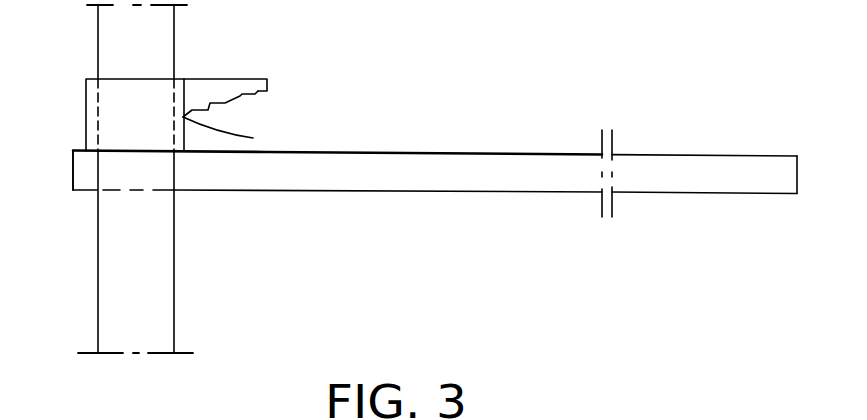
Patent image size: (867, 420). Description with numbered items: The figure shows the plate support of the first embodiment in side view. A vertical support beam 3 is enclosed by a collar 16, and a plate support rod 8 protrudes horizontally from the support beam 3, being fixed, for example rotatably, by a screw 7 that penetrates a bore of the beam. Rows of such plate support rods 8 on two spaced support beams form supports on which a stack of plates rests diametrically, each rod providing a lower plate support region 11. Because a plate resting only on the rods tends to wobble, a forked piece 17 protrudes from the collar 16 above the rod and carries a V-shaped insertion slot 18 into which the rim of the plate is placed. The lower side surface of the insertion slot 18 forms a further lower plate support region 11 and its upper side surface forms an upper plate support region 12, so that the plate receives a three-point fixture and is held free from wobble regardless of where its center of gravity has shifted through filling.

The support beam 3 is at (120, 250).
The screw 7 is at (85, 170).
The plate support rod 8 is at (550, 176).
The lower plate support region 11 is at (262, 151).
The upper plate support region 12 is at (270, 90).
The collar 16 is at (87, 120).
The forked piece 17 is at (223, 90).
The insertion slot 18 is at (235, 118).